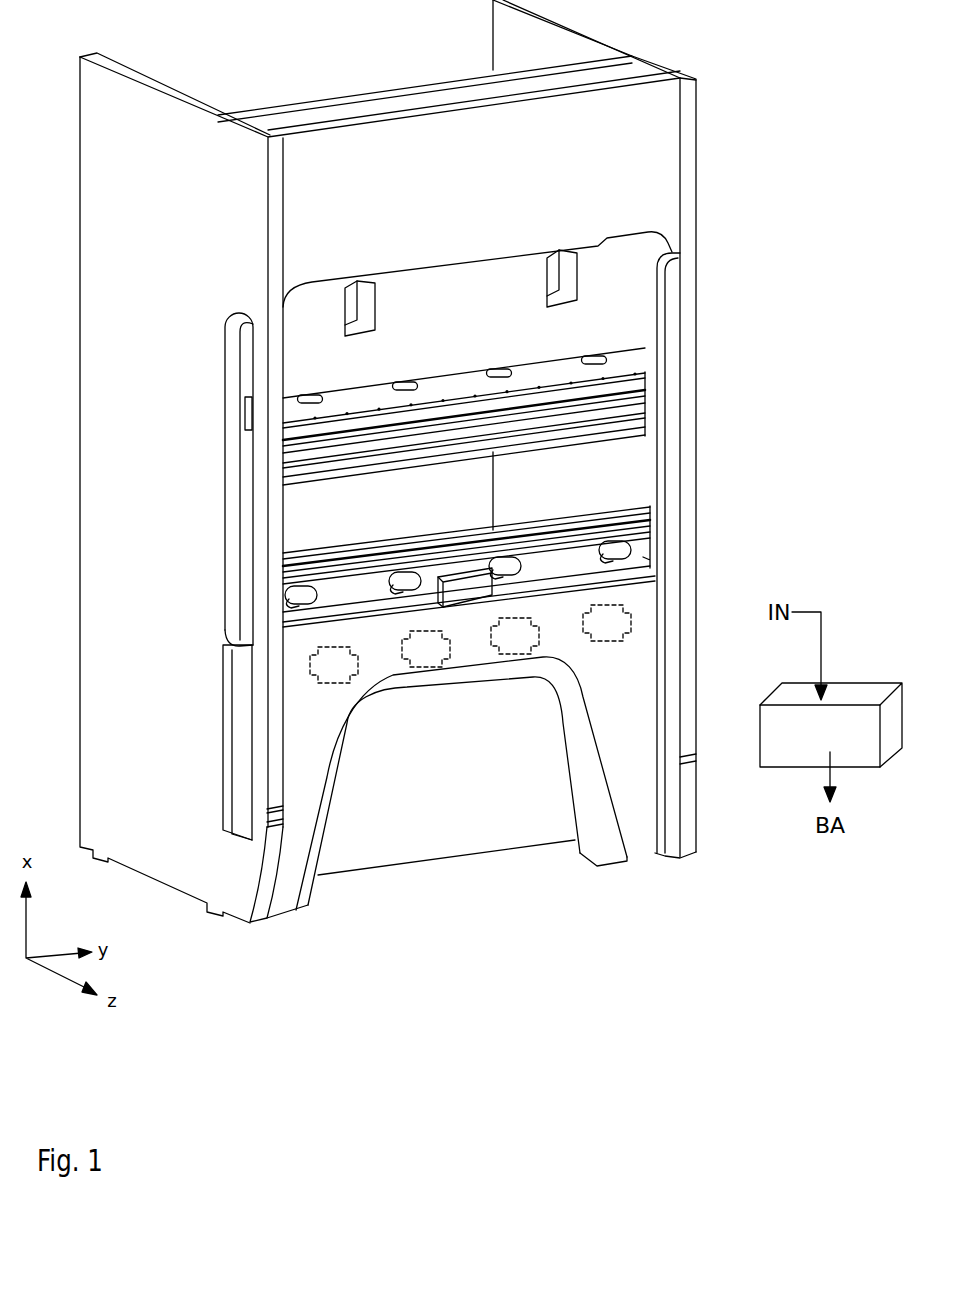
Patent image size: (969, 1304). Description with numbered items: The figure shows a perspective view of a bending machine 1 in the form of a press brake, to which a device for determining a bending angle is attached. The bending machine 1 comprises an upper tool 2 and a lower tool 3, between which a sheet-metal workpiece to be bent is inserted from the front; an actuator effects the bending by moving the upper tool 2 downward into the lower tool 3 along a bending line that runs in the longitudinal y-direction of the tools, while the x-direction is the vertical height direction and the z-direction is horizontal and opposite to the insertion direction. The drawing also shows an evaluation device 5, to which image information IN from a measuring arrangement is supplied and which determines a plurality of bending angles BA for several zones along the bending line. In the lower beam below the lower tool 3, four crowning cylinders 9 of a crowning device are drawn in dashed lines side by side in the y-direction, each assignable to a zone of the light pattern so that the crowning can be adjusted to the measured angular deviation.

The bending machine 1 is at (593, 905).
The upper tool 2 is at (627, 410).
The lower tool 3 is at (642, 543).
The evaluation device 5 is at (863, 692).
The crowning cylinders 9 is at (333, 683).